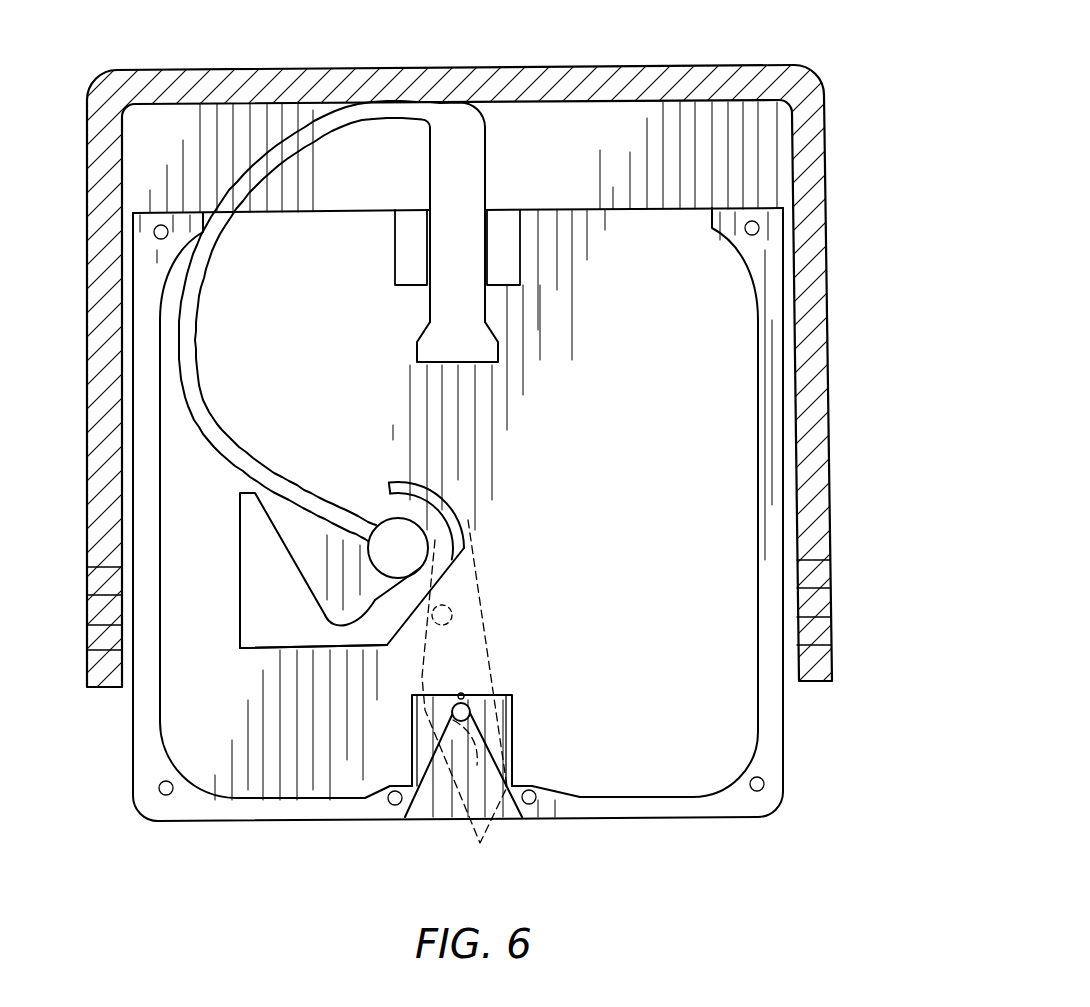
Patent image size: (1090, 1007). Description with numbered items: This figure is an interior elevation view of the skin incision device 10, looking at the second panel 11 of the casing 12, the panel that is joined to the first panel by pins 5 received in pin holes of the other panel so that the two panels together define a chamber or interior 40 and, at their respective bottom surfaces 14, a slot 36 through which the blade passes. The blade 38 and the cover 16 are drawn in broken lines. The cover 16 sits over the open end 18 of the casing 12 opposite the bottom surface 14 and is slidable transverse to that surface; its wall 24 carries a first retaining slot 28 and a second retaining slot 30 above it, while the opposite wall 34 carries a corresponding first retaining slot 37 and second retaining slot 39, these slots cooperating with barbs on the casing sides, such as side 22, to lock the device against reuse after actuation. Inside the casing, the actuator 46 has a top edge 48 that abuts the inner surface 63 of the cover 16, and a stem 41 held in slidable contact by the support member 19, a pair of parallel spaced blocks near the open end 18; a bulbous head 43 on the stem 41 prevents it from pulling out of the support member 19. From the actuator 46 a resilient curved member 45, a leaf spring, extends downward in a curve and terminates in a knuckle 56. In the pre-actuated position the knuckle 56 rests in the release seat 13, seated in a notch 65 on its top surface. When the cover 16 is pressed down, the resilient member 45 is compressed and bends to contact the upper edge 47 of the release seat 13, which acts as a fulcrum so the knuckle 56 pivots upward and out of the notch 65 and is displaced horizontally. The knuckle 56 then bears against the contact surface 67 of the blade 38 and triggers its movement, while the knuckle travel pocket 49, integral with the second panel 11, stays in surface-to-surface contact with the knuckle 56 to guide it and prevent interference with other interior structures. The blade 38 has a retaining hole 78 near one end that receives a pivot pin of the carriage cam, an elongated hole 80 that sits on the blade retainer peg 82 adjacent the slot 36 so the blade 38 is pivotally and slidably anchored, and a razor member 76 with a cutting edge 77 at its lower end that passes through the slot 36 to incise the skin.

The skin incision device 10 is at (682, 40).
The cover 16 is at (815, 137).
The inner surface of the cover 63 is at (500, 104).
The wall 24 is at (94, 350).
The opposite wall 34 is at (827, 320).
The second retaining slot 30 is at (96, 572).
The first retaining slot 28 is at (94, 640).
The second retaining slot 39 is at (815, 577).
The first retaining slot 37 is at (815, 637).
The casing 12 is at (720, 208).
The bottom surface 14 is at (672, 815).
The pins 5 is at (160, 796).
The open end 18 is at (347, 213).
The support member 19 is at (403, 257).
The side 22 is at (770, 417).
The second panel 11 is at (173, 750).
The interior 40 is at (669, 607).
The slot 36 is at (430, 815).
The resilient curved member 45 is at (188, 352).
The top edge 48 is at (397, 106).
The actuator 46 is at (434, 203).
The stem 41 is at (477, 288).
The bulbous head 43 is at (433, 357).
The knuckle 56 is at (396, 518).
The knuckle travel pocket 49 is at (425, 483).
The contact surface 67 is at (432, 540).
The blade 38 is at (467, 519).
The upper edge 47 is at (250, 507).
The notch 65 is at (343, 622).
The release seat 13 is at (262, 637).
The retaining hole 78 is at (448, 612).
The elongated hole 80 is at (462, 696).
The blade retainer peg 82 is at (452, 714).
The cutting edge 77 is at (438, 778).
The razor member 76 is at (478, 825).